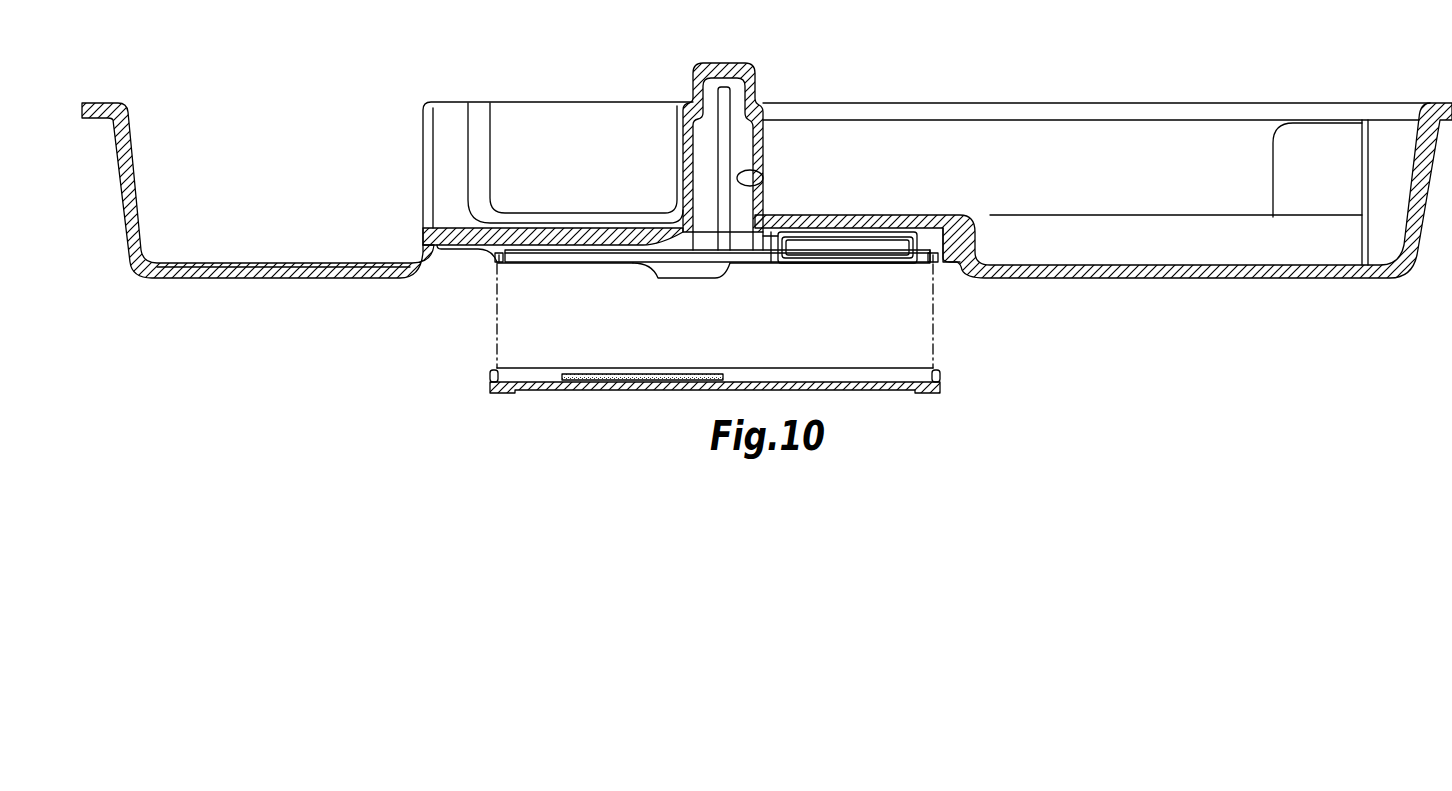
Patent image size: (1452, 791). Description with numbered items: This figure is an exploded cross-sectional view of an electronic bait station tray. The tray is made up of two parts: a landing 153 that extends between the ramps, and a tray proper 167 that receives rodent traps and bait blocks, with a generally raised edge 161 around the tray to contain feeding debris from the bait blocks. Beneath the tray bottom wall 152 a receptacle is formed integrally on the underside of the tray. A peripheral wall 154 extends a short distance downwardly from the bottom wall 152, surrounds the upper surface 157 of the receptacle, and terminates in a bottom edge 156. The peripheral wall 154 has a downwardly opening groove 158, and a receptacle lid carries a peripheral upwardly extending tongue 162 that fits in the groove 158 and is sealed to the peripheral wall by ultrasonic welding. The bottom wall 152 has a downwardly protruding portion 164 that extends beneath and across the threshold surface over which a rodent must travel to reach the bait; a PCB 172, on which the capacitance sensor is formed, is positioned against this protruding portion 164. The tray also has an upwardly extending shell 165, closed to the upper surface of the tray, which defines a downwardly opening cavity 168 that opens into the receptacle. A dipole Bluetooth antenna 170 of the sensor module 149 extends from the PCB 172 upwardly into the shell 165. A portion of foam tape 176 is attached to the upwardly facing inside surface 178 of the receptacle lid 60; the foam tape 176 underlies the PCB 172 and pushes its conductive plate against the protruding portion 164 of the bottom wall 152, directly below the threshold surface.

The cover plate 60 is at (620, 393).
The sensor module 149 is at (667, 246).
The tray bottom wall 152 is at (518, 238).
The landing 153 is at (262, 263).
The peripheral wall 154 is at (945, 264).
The bottom edge 156 is at (930, 264).
The upper surface 157 is at (545, 263).
The groove 158 is at (495, 263).
The raised edge 161 is at (1330, 100).
The tongue 162 is at (497, 370).
The protruding portion 164 is at (590, 265).
The shell 165 is at (762, 150).
The tray proper 167 is at (585, 104).
The cavity 168 is at (765, 190).
The dipole Bluetooth antenna 170 is at (718, 143).
The PCB 172 is at (643, 270).
The foam tape 176 is at (677, 377).
The inside surface 178 is at (805, 375).